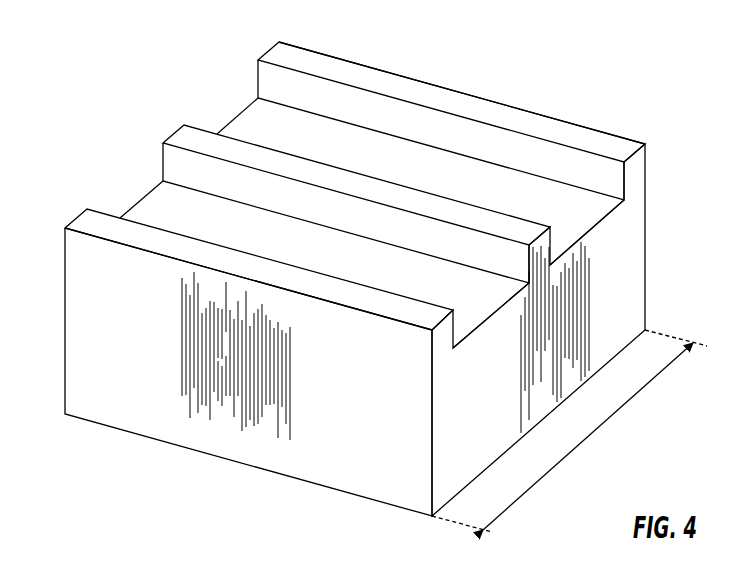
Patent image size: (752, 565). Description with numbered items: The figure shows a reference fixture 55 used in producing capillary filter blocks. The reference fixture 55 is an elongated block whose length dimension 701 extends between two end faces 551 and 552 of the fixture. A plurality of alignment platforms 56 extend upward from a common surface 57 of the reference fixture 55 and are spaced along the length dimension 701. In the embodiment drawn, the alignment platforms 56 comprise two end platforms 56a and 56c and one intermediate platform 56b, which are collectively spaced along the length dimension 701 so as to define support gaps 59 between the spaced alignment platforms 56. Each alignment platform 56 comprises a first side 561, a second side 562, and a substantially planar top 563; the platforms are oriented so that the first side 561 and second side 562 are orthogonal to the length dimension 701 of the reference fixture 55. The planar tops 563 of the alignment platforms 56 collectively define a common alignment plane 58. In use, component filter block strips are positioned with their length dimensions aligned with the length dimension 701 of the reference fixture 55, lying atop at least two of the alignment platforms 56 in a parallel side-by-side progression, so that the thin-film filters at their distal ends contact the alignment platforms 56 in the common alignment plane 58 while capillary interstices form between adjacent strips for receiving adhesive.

The reference fixture 55 is at (639, 240).
The end face 551 is at (68, 354).
The end face 552 is at (384, 272).
The alignment platforms 56 is at (355, 286).
The end platform 56a is at (410, 312).
The intermediate platform 56b is at (375, 182).
The end platform 56c is at (498, 107).
The first side 561 is at (514, 263).
The second side 562 is at (553, 235).
The planar top 563 is at (603, 143).
The common surface 57 is at (565, 200).
The common alignment plane 58 is at (384, 272).
The support gaps 59 is at (217, 114).
The length dimension 701 is at (616, 417).